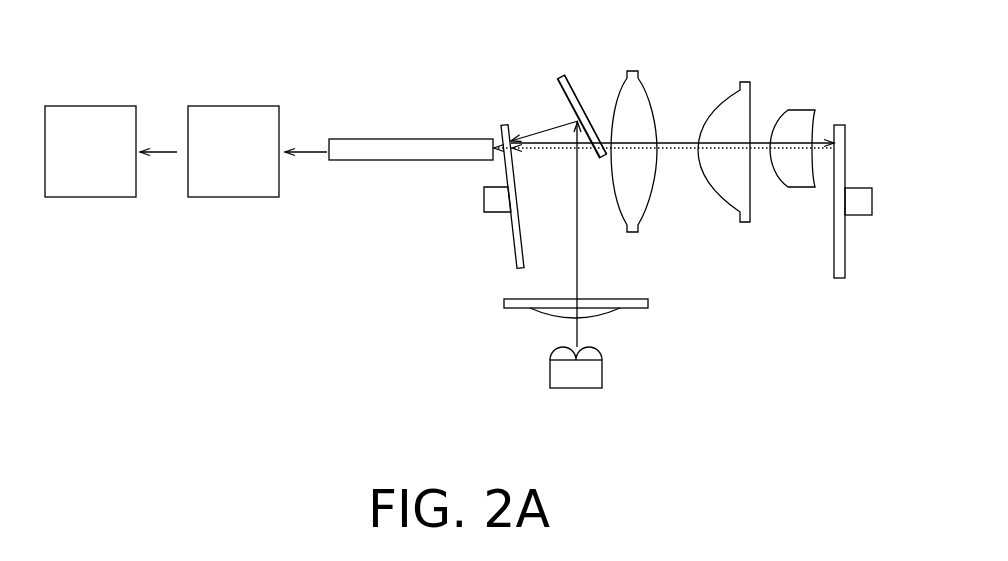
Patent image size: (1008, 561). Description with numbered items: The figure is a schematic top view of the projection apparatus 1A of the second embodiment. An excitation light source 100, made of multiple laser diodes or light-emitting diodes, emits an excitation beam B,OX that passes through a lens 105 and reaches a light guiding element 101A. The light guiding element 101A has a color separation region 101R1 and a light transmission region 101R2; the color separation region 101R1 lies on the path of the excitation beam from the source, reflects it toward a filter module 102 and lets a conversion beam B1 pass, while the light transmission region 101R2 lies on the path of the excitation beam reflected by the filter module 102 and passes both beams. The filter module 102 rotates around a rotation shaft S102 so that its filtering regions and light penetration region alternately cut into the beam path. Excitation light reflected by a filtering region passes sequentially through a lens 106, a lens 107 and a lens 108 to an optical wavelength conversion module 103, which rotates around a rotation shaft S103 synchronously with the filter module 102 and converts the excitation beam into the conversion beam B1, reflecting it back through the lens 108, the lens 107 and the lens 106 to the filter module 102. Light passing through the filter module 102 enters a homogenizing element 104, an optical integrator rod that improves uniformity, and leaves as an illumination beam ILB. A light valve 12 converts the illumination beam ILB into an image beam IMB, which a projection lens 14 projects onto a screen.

The projection lens 14 is at (100, 164).
The light valve 12 is at (246, 164).
The image beam IMB is at (158, 155).
The illumination beam ILB is at (302, 155).
The homogenizing element 104 is at (409, 147).
The filter module 102 is at (504, 246).
The rotation shaft of the filter module S102 is at (490, 196).
The light guiding element 101A is at (557, 75).
The color separation region 101R1 is at (561, 96).
The light transmission region 101R2 is at (600, 158).
The excitation beam B,OX is at (580, 333).
The conversion beam B1 is at (755, 152).
The lens 106 is at (632, 77).
The lens 107 is at (744, 82).
The lens 108 is at (800, 120).
The optical wavelength conversion module 103 is at (862, 261).
The rotation shaft of the optical wavelength conversion module S103 is at (862, 195).
The lens 105 is at (651, 303).
The excitation light source 100 is at (604, 378).
The projection apparatus 1A is at (828, 467).